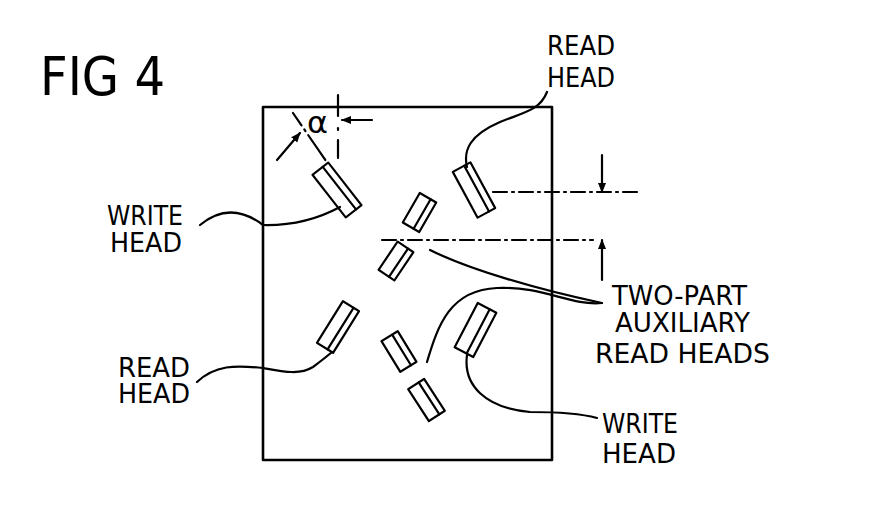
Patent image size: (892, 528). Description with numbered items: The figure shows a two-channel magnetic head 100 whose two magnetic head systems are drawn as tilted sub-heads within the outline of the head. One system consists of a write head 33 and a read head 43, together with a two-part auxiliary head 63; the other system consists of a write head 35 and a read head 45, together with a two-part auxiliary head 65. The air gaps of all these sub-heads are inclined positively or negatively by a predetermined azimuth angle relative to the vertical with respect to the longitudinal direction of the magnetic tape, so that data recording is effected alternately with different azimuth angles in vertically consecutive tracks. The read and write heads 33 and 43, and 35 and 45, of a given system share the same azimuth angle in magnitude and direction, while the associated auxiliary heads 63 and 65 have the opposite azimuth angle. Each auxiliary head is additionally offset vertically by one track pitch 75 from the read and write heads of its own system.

The two-channel magnetic head 100 is at (263, 148).
The write head 35 is at (332, 190).
The read head 45 is at (480, 187).
The two-part auxiliary head 65 is at (407, 221).
The two-part auxiliary head 63 is at (392, 367).
The write head 33 is at (481, 334).
The read head 43 is at (328, 325).
The track pitch 75 is at (512, 217).